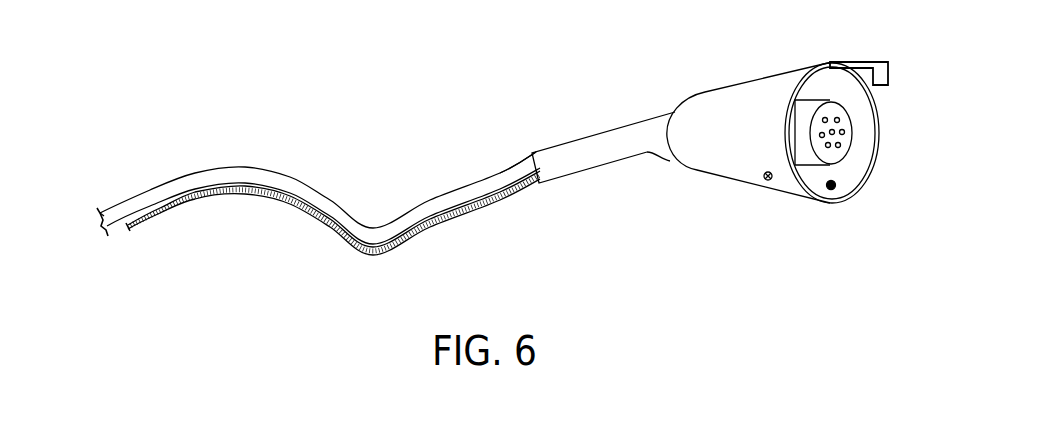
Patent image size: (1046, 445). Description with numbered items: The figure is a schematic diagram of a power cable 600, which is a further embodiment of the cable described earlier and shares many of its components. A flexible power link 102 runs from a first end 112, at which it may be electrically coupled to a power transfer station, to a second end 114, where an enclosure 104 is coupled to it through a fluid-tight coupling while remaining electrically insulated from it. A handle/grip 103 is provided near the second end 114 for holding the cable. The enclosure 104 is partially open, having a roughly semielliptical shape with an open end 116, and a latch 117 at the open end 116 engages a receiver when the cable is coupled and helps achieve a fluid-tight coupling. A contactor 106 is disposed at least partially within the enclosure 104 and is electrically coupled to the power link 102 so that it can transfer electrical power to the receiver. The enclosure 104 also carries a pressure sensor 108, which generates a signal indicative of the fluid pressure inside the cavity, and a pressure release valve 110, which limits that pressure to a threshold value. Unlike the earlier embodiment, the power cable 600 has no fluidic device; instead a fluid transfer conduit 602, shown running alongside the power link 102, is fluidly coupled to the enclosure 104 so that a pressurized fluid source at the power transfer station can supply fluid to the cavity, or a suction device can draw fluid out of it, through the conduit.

The power cable 600 is at (198, 58).
The power link 102 is at (238, 170).
The first end 112 is at (112, 234).
The fluid transfer conduit 602 is at (348, 249).
The second end 114 is at (521, 171).
The handle/grip 103 is at (575, 145).
The enclosure 104 is at (690, 102).
The open end 116 is at (880, 123).
The latch 117 is at (865, 60).
The contactor 106 is at (848, 143).
The pressure sensor 108 is at (838, 189).
The pressure release valve 110 is at (765, 182).